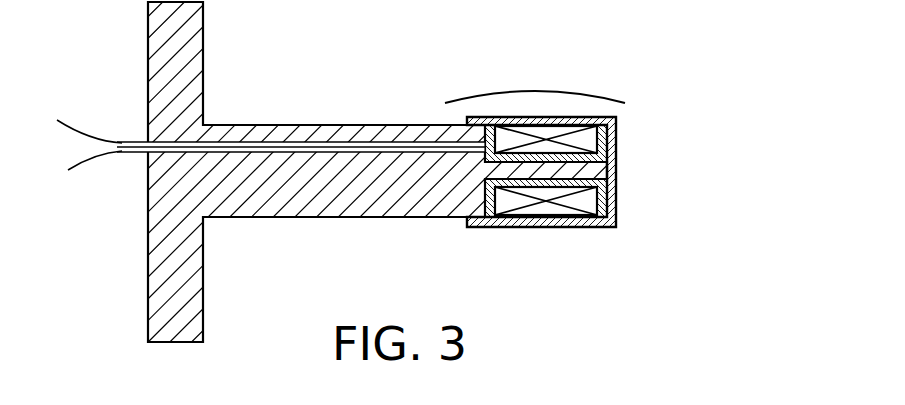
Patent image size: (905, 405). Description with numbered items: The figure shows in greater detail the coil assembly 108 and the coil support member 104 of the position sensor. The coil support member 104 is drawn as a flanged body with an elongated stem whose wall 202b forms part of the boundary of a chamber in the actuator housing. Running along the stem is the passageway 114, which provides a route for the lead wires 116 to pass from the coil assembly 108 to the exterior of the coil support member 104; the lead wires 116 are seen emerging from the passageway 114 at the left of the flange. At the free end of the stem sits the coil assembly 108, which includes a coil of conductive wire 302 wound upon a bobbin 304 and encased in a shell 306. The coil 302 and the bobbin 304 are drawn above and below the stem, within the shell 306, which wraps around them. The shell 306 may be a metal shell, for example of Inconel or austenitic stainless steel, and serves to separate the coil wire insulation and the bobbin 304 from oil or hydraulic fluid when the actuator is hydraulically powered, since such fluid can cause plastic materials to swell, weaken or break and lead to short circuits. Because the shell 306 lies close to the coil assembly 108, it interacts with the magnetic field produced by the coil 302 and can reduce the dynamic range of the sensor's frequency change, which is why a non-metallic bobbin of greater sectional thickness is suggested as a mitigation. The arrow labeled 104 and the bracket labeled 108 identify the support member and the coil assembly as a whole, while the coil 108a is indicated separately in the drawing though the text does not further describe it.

The coil support member 104 is at (668, 71).
The coil assembly 108 is at (528, 92).
The transducer coil 108a is at (588, 142).
The passageway 114 is at (333, 153).
The lead wires 116 is at (105, 147).
The interior wall of the coil support member 202b is at (263, 125).
The coil of conductive wire 302 is at (547, 205).
The bobbin 304 is at (493, 197).
The shell 306 is at (598, 227).